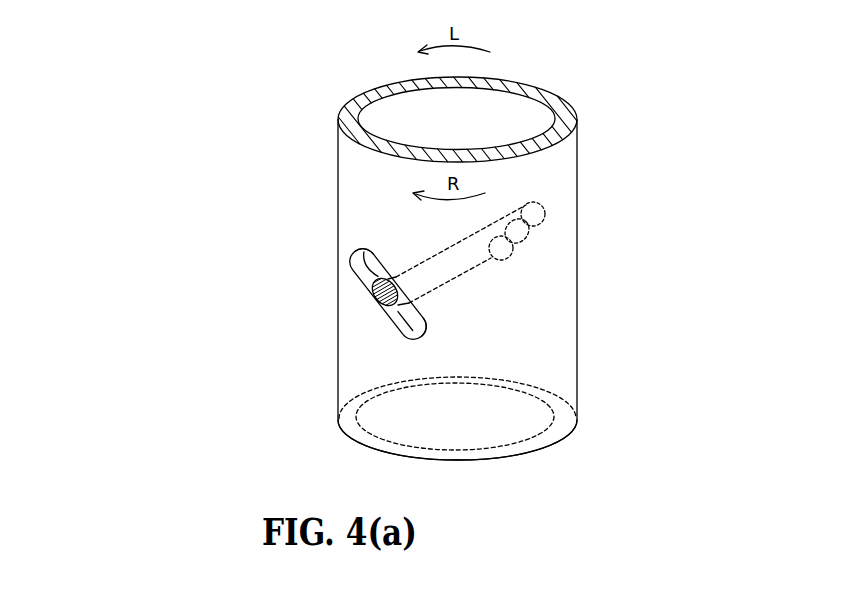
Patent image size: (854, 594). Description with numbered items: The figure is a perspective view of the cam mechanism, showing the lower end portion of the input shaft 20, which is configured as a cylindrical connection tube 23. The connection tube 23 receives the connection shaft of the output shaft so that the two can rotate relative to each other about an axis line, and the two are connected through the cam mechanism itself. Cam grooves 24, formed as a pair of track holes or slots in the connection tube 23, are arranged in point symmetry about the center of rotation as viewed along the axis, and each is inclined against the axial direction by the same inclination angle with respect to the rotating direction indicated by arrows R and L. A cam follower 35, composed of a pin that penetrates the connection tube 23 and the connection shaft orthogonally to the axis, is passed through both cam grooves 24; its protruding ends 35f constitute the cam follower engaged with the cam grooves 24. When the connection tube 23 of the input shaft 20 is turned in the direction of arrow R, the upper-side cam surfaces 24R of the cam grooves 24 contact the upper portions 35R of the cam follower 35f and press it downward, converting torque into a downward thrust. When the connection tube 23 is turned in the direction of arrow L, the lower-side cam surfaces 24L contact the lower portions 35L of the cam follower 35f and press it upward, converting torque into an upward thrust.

The input shaft 20 is at (457, 440).
The connection tube 23 is at (570, 348).
The cam grooves 24 is at (352, 268).
The upper-side cam surfaces 24R is at (381, 272).
The lower-side cam surfaces 24L is at (395, 324).
The cam follower 35 is at (462, 275).
The protruding ends of the pin 35f is at (371, 293).
The upper portions of the cam follower 35R is at (389, 278).
The lower portions of the cam follower 35L is at (382, 304).